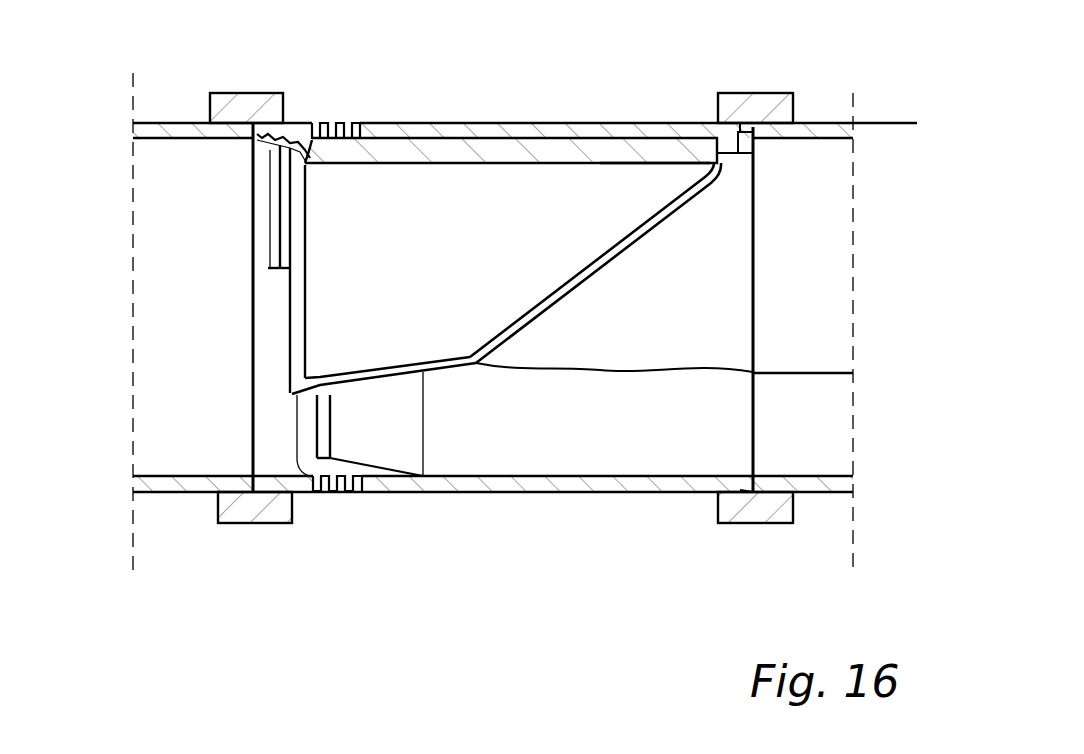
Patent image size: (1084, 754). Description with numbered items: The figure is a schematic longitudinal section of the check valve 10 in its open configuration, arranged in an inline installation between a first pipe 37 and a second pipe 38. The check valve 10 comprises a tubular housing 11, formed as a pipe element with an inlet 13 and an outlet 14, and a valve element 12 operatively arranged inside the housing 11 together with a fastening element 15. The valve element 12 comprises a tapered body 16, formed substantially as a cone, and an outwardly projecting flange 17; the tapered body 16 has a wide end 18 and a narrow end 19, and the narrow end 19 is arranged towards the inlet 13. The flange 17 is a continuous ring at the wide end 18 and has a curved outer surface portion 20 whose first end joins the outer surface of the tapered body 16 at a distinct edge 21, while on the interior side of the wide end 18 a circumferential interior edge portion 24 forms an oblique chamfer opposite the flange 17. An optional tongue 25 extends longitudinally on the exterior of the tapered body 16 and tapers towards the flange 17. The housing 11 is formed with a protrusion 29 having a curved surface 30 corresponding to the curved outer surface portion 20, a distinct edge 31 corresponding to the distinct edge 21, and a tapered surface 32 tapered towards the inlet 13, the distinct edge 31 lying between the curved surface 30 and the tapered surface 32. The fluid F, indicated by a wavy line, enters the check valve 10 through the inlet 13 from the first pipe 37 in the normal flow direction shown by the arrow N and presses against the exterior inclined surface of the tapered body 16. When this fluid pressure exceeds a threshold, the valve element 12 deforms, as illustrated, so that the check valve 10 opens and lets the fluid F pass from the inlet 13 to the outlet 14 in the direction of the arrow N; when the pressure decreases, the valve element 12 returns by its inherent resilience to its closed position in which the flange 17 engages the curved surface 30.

The check valve 10 is at (560, 65).
The tubular housing 11 is at (652, 480).
The valve element 12 is at (462, 186).
The inlet 13 is at (753, 348).
The outlet 14 is at (248, 238).
The fastening element 15 is at (263, 192).
The tapered body 16 is at (453, 340).
The outwardly projecting flange 17 is at (300, 133).
The wide end 18 is at (290, 345).
The narrow end 19 is at (718, 172).
The curved outer surface portion 20 is at (300, 392).
The distinct edge 21 is at (332, 124).
The circumferential interior edge portion 24 is at (297, 290).
The tongue 25 is at (663, 150).
The protrusion 29 is at (334, 480).
The curved surface 30 is at (303, 453).
The distinct edge 31 is at (313, 478).
The tapered surface 32 is at (377, 462).
The first pipe 37 is at (828, 125).
The second pipe 38 is at (165, 129).
The fluid F is at (565, 373).
The arrow N is at (790, 412).